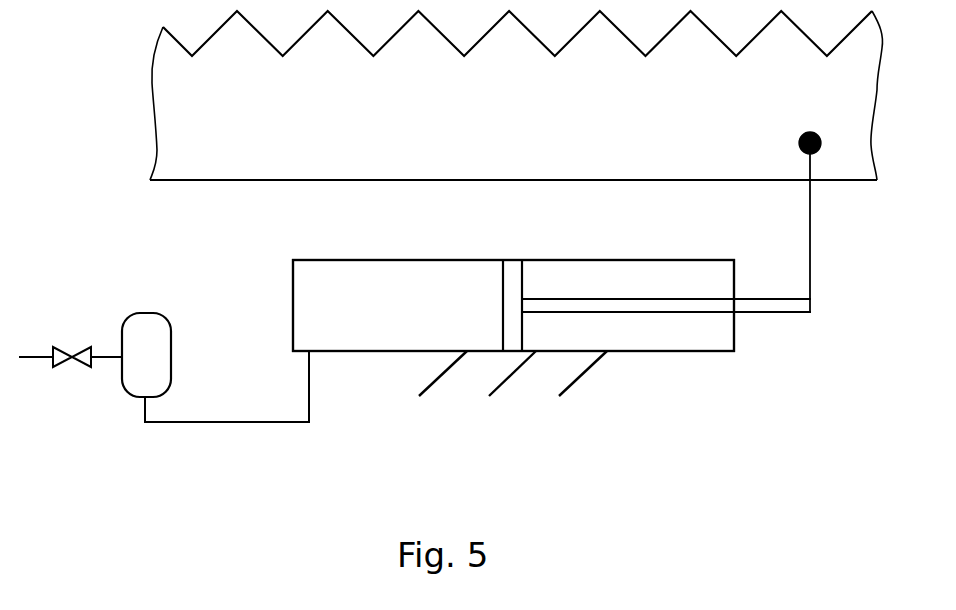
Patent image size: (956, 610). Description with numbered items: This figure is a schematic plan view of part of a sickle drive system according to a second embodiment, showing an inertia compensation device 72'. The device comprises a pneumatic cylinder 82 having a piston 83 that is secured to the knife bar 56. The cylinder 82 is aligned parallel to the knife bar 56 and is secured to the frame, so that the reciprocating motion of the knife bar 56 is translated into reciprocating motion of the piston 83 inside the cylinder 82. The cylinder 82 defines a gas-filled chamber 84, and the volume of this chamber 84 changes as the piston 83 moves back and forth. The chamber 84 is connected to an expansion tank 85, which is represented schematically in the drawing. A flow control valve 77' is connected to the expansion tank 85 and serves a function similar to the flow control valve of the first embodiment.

The knife bar 56 is at (163, 125).
The inertia compensation device 72' is at (496, 389).
The pneumatic cylinder 82 is at (630, 351).
The piston 83 is at (507, 351).
The gas-filled chamber 84 is at (399, 351).
The expansion tank 85 is at (148, 334).
The flow control valve 77' is at (59, 396).